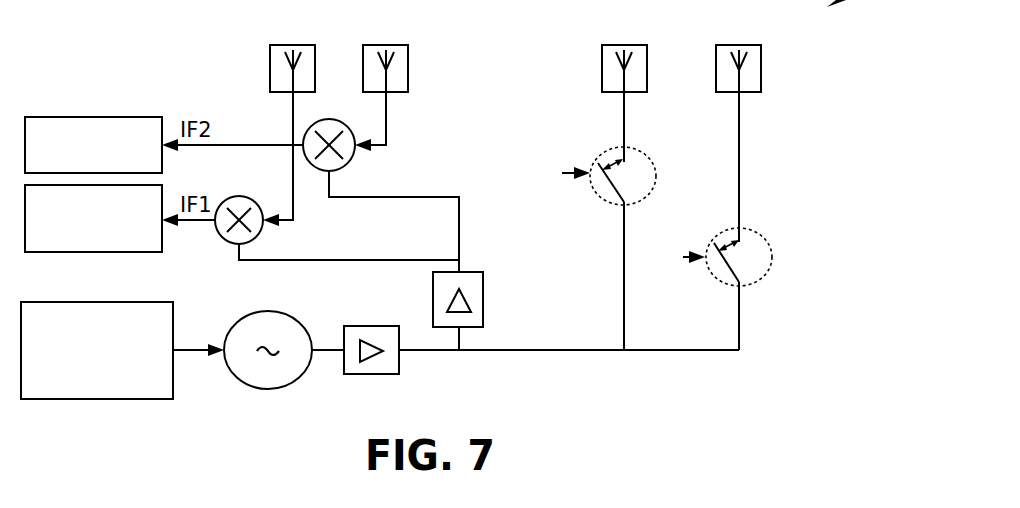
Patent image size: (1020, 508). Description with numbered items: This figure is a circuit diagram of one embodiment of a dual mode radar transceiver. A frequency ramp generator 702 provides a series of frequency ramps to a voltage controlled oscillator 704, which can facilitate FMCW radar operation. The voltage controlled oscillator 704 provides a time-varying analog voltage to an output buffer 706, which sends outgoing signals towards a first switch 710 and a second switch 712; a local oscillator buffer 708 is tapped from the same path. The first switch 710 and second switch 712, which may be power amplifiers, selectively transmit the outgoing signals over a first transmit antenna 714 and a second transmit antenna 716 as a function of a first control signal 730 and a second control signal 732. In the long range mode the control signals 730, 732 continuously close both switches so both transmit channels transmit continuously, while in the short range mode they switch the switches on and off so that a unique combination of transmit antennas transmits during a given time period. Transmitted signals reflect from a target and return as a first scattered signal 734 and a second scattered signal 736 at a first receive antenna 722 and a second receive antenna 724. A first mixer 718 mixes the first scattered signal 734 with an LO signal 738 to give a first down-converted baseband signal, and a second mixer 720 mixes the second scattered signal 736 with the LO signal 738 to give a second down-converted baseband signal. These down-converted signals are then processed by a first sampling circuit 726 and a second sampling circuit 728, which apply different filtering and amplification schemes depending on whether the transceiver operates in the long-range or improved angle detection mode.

The frequency ramp generator 702 is at (88, 399).
The voltage controlled oscillator 704 is at (266, 388).
The output buffer 706 is at (375, 374).
The local oscillator buffer 708 is at (483, 300).
The first switch 710 is at (640, 150).
The second switch 712 is at (760, 232).
The first transmit antenna 714 is at (602, 67).
The second transmit antenna 716 is at (761, 70).
The first mixer 718 is at (257, 237).
The second mixer 720 is at (347, 163).
The first receive antenna 722 is at (270, 65).
The second receive antenna 724 is at (408, 67).
The first sampling circuit 726 is at (103, 252).
The second sampling circuit 728 is at (98, 117).
The first control signal 730 is at (553, 174).
The second control signal 732 is at (671, 258).
The first scattered signal 734 is at (293, 120).
The second scattered signal 736 is at (386, 120).
The LO signal 738 is at (358, 259).